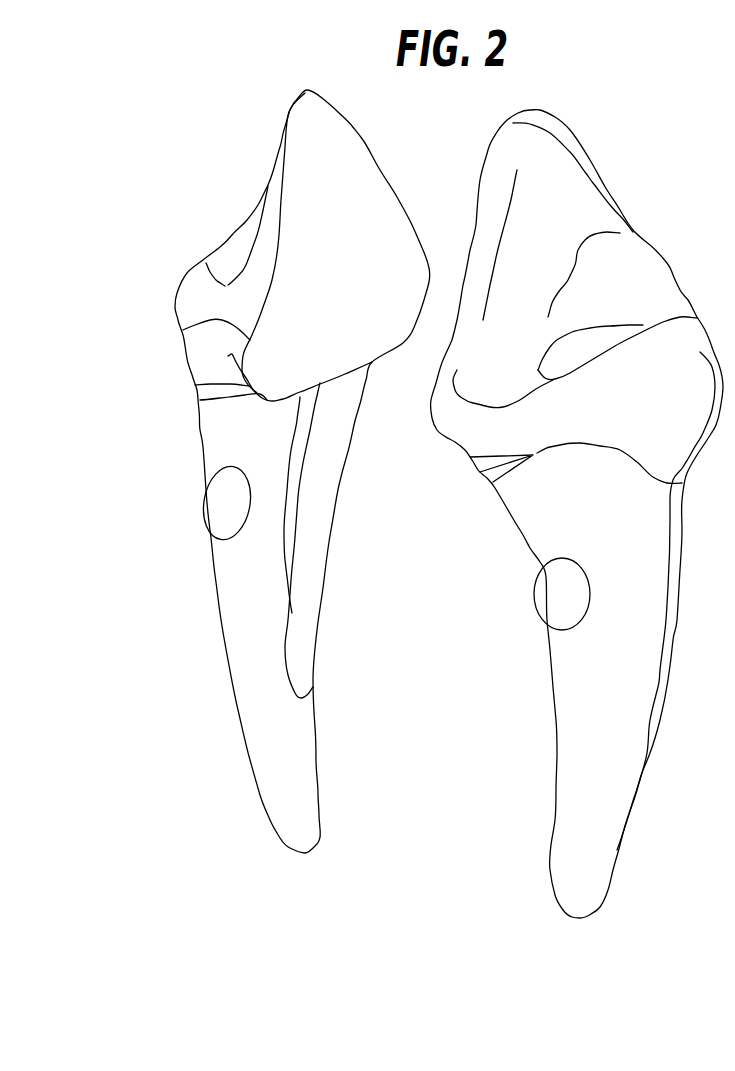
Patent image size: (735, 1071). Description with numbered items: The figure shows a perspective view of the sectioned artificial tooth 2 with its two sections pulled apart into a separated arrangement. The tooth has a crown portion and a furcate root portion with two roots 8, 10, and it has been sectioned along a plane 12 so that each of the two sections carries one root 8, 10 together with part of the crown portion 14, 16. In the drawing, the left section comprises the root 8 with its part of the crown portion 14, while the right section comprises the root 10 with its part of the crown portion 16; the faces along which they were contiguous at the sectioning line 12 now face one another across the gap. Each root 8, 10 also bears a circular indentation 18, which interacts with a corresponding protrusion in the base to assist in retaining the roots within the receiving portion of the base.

The sectioned artificial tooth 2 is at (186, 706).
The root 8 is at (270, 778).
The root 10 is at (598, 852).
The plane 12 is at (350, 148).
The part of the crown portion 14 is at (238, 238).
The part of the crown portion 16 is at (592, 205).
The circular indentations 18 is at (217, 508).